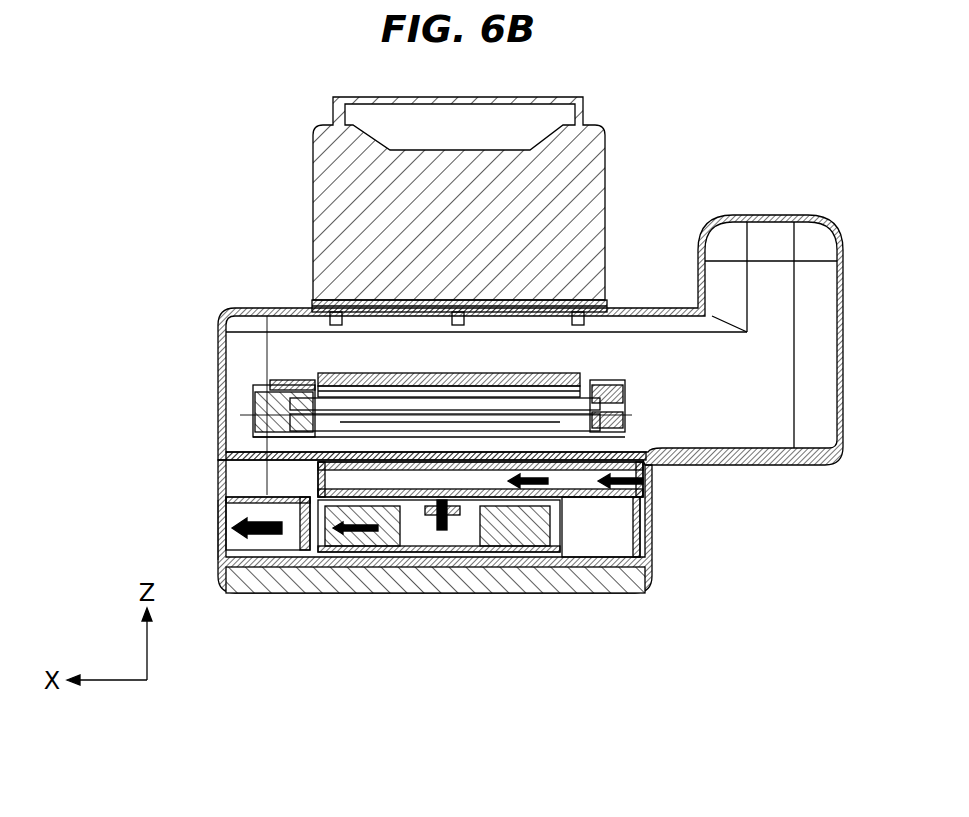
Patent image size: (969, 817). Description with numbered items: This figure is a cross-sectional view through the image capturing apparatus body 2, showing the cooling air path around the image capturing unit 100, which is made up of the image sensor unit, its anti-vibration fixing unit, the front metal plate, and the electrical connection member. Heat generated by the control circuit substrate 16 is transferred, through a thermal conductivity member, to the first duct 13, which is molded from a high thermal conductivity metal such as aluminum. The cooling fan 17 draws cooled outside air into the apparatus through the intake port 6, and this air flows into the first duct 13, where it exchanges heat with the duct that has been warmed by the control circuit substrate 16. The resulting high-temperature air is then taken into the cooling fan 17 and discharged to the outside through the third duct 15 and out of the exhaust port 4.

The image capturing apparatus body 2 is at (253, 308).
The exhaust port 4 is at (222, 530).
The intake port 6 is at (648, 482).
The first duct 13 is at (587, 485).
The third duct 15 is at (273, 507).
The control circuit substrate 16 is at (265, 448).
The cooling fan 17 is at (515, 540).
The image capturing unit 100 is at (262, 388).